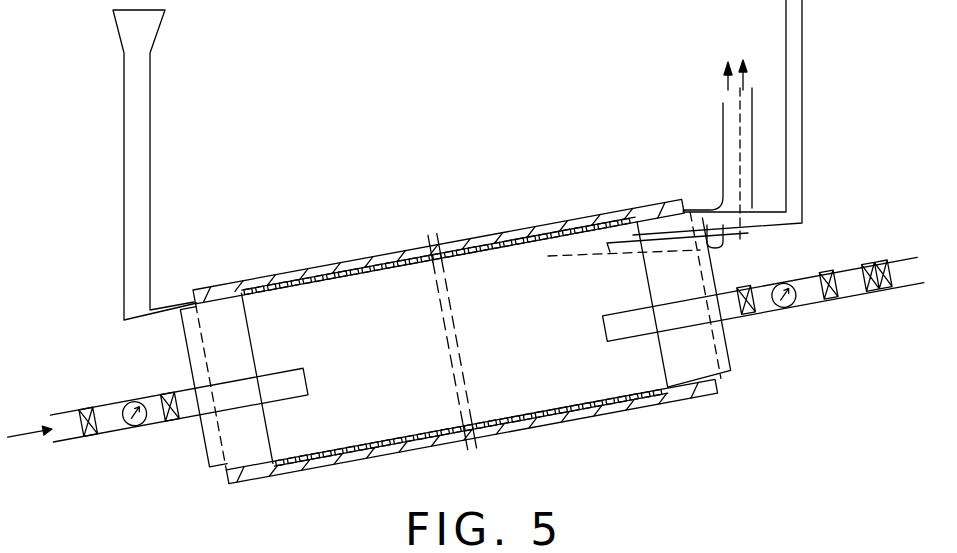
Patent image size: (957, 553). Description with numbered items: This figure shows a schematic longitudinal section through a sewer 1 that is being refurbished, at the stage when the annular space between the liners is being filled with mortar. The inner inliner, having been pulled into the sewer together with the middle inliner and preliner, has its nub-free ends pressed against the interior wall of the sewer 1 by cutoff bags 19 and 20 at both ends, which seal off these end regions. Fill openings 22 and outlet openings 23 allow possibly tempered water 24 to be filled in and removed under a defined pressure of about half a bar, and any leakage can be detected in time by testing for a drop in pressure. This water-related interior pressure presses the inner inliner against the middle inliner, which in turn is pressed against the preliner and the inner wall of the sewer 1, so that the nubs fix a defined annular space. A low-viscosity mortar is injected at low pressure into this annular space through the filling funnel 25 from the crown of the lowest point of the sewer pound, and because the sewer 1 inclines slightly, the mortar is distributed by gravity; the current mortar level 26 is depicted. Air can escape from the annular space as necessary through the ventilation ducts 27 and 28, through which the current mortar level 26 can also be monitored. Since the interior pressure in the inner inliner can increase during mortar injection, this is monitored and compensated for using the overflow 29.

The sewer 1 is at (530, 421).
The cutoff bag 19 is at (207, 460).
The cutoff bag 20 is at (732, 366).
The fill openings 22 is at (115, 426).
The outlet openings 23 is at (809, 298).
The water 24 is at (508, 352).
The filling funnel 25 is at (151, 24).
The current mortar level 26 is at (577, 252).
The ventilation duct 27 is at (723, 106).
The ventilation duct 28 is at (752, 145).
The overflow 29 is at (800, 10).